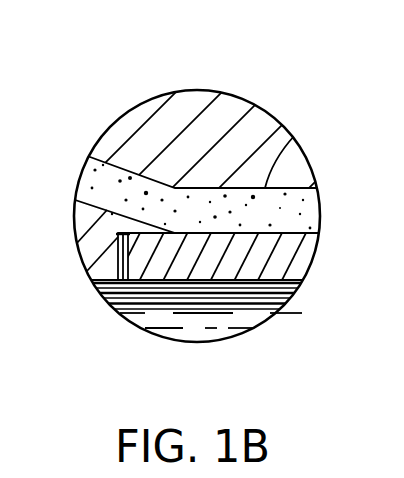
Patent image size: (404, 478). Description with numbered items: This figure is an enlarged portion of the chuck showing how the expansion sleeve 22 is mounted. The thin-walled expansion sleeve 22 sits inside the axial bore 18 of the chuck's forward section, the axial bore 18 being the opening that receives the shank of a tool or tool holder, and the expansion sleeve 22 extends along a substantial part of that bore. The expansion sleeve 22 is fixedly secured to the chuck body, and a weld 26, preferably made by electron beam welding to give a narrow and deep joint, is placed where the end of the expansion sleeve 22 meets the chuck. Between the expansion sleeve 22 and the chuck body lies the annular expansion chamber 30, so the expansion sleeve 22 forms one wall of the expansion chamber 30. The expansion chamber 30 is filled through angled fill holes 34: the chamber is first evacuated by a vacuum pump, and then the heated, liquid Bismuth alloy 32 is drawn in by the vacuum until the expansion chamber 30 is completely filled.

The axial bore 18 is at (160, 313).
The expansion sleeve 22 is at (283, 260).
The weld 26 is at (97, 268).
The expansion chamber 30 is at (250, 188).
The alloy 32 is at (310, 209).
The fill holes 34 is at (126, 170).